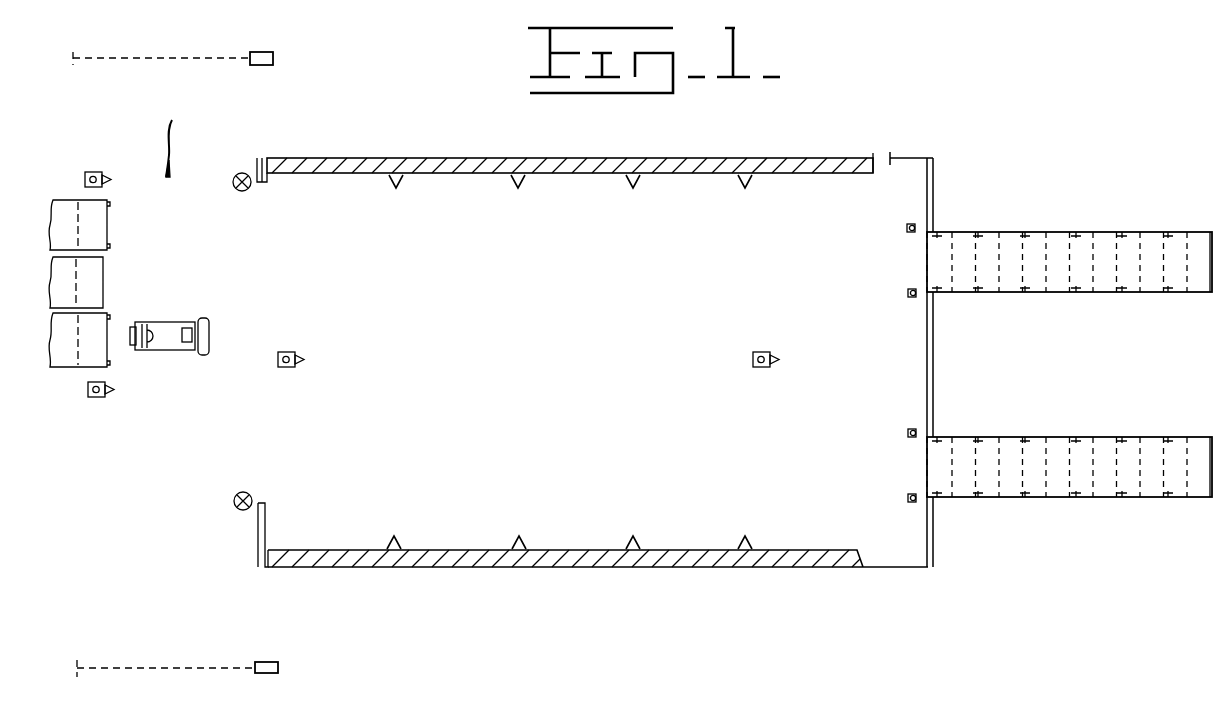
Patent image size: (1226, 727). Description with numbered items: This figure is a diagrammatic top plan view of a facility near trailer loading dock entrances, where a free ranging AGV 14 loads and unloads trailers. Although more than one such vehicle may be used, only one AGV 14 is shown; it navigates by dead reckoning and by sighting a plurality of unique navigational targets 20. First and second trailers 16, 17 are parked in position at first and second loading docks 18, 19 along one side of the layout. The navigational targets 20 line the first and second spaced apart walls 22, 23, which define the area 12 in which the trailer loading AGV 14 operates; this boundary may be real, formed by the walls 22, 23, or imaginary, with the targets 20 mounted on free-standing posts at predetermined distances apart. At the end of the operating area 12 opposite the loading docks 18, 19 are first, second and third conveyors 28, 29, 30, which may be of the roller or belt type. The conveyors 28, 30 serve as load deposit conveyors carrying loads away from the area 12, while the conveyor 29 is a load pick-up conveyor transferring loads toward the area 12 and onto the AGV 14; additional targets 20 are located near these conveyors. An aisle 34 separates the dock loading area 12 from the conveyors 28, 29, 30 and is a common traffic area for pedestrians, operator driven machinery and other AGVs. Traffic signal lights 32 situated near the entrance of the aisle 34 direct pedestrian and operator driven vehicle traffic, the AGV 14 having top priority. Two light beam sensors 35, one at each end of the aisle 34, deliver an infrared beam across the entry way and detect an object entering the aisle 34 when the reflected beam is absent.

The area 12 is at (548, 372).
The AGV 14 is at (170, 353).
The first trailer 16 is at (1085, 437).
The second trailer 17 is at (1087, 232).
The first loading dock 18 is at (920, 462).
The second loading dock 19 is at (920, 258).
The navigational targets 20 is at (94, 172).
The first wall 22 is at (535, 158).
The second wall 23 is at (548, 567).
The first conveyor 28 is at (88, 228).
The second conveyor 29 is at (85, 283).
The third conveyor 30 is at (95, 340).
The traffic signal lights 32 is at (236, 175).
The aisle 34 is at (185, 145).
The light beam sensors 35 is at (262, 52).